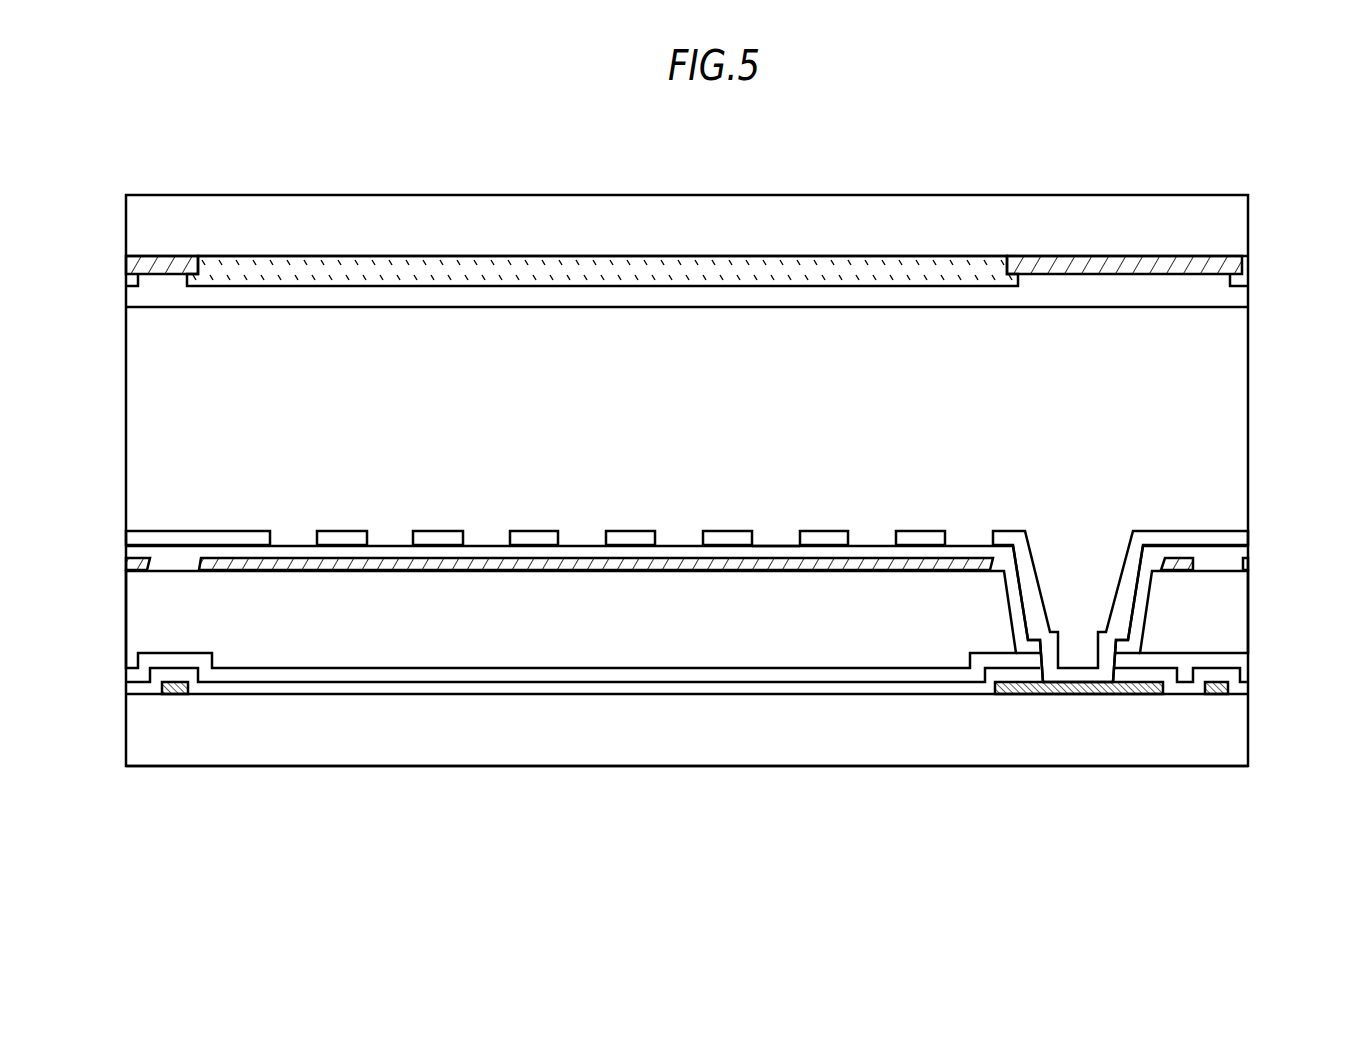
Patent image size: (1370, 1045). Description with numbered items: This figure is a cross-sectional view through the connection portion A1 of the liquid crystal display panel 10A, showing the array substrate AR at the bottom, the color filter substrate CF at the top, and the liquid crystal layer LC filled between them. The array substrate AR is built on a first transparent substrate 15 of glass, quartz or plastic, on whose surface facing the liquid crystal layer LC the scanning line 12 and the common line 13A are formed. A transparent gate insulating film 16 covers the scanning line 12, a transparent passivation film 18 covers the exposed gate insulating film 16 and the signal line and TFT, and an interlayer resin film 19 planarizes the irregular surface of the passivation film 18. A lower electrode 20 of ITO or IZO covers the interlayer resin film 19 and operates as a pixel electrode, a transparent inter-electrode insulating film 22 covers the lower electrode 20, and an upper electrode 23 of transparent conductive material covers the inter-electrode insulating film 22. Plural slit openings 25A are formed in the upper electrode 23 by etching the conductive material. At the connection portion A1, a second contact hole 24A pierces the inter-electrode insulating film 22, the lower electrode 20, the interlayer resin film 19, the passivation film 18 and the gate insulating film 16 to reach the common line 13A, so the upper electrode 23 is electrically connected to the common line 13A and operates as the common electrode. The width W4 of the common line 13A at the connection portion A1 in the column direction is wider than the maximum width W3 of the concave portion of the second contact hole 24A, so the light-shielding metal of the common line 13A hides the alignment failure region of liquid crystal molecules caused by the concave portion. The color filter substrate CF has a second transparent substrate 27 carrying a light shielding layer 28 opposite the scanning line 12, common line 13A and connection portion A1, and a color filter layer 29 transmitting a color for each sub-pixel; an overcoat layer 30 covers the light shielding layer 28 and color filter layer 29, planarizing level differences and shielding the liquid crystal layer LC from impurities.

The liquid crystal display panel 10A is at (740, 125).
The color filter substrate CF is at (1270, 195).
The array substrate AR is at (1270, 531).
The second transparent substrate 27 is at (594, 215).
The light shielding layer 28 is at (180, 272).
The color filter layer 29 is at (482, 270).
The overcoat layer 30 is at (409, 298).
The liquid crystal layer LC is at (736, 374).
The inter-electrode insulating film 22 is at (673, 555).
The upper electrode 23 is at (212, 540).
The slit openings 25A is at (770, 540).
The lower electrode 20 is at (576, 558).
The interlayer resin film 19 is at (636, 629).
The passivation film 18 is at (462, 673).
The gate insulating film 16 is at (560, 688).
The first transparent substrate 15 is at (658, 728).
The scanning line 12 is at (180, 697).
The common line 13A is at (1073, 694).
The second contact hole 24A is at (1093, 591).
The connection portion A1 is at (1073, 678).
The maximum width of the concave portion of the second contact hole W3 is at (1135, 520).
The width of the common line at the connection portion W4 is at (995, 707).